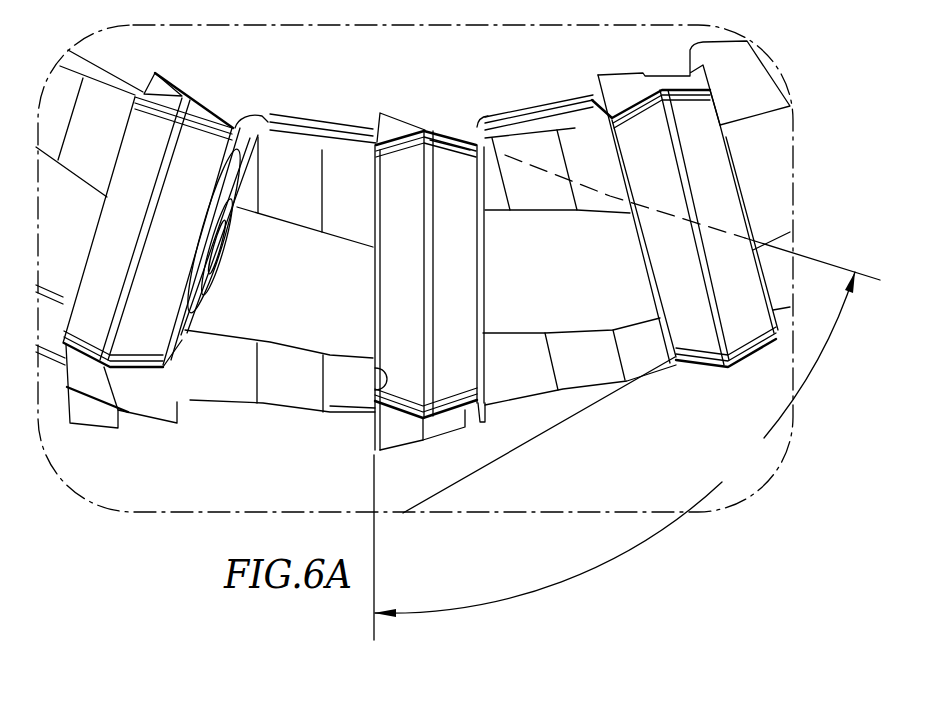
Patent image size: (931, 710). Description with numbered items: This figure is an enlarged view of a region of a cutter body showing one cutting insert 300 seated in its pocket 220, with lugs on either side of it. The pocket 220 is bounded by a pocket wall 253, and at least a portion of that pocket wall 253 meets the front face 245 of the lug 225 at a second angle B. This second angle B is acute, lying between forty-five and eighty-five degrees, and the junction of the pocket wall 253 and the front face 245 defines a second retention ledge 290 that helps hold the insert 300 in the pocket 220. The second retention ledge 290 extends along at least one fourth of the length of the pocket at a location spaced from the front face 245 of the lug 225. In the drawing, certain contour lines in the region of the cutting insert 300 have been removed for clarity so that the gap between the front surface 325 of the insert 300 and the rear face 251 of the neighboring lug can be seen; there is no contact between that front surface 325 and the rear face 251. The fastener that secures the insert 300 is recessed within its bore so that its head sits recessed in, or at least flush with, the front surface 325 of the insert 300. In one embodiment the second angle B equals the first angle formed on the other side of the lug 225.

The pocket 220 is at (394, 115).
The lug 225 is at (320, 318).
The front face 245 is at (375, 392).
The rear face 251 is at (488, 270).
The pocket wall 253 is at (453, 147).
The second retention ledge 290 is at (460, 152).
The cutting insert 300 is at (455, 138).
The front surface 325 is at (480, 341).
The second angle B is at (614, 444).